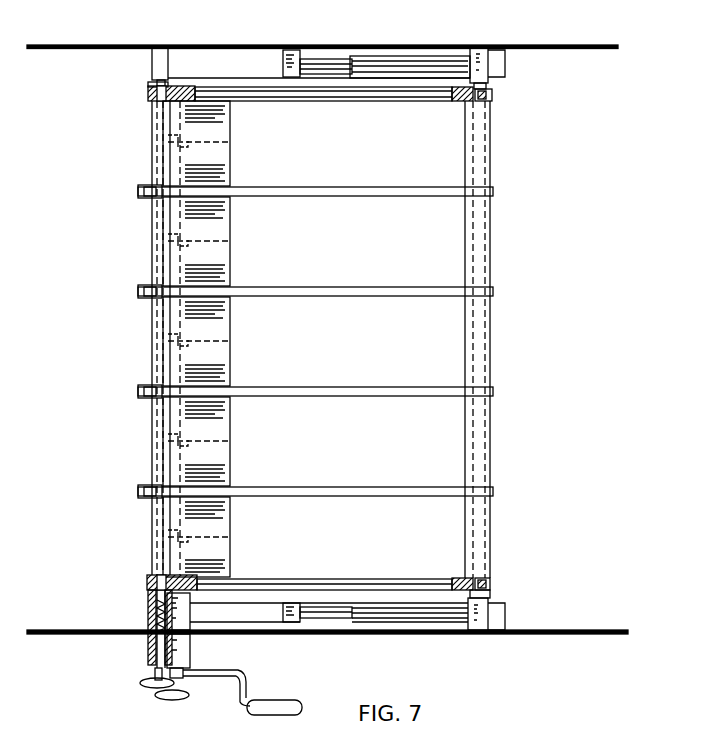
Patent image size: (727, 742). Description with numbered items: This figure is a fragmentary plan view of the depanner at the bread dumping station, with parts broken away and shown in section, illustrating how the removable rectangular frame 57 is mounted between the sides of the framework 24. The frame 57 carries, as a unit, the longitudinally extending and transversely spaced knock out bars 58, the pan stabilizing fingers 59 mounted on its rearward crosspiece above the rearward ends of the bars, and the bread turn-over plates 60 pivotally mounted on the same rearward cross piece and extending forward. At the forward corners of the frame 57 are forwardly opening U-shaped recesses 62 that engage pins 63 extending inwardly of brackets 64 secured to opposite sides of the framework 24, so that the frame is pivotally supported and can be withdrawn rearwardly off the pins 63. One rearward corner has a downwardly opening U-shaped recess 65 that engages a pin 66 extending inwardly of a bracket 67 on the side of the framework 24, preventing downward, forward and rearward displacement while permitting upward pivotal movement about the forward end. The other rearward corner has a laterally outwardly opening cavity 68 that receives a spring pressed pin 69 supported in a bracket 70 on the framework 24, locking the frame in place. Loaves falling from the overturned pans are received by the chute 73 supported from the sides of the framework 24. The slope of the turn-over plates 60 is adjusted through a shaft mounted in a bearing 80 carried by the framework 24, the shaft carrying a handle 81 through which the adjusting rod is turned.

The framework 24 is at (556, 47).
The rectangular frame 57 is at (352, 102).
The knock out bars 58 is at (317, 196).
The pan stabilizing fingers 59 is at (140, 197).
The bread turn-over plates 60 is at (230, 141).
The U-shaped recesses 62 is at (485, 94).
The pins 63 is at (493, 88).
The brackets 64 is at (490, 62).
The U-shaped recess 65 is at (150, 95).
The pin 66 is at (150, 84).
The bracket 67 is at (160, 62).
The cavity 68 is at (150, 583).
The spring pressed pin 69 is at (150, 648).
The bracket 70 is at (150, 665).
The chute 73 is at (233, 75).
The bearing 80 is at (192, 648).
The handle 81 is at (243, 690).